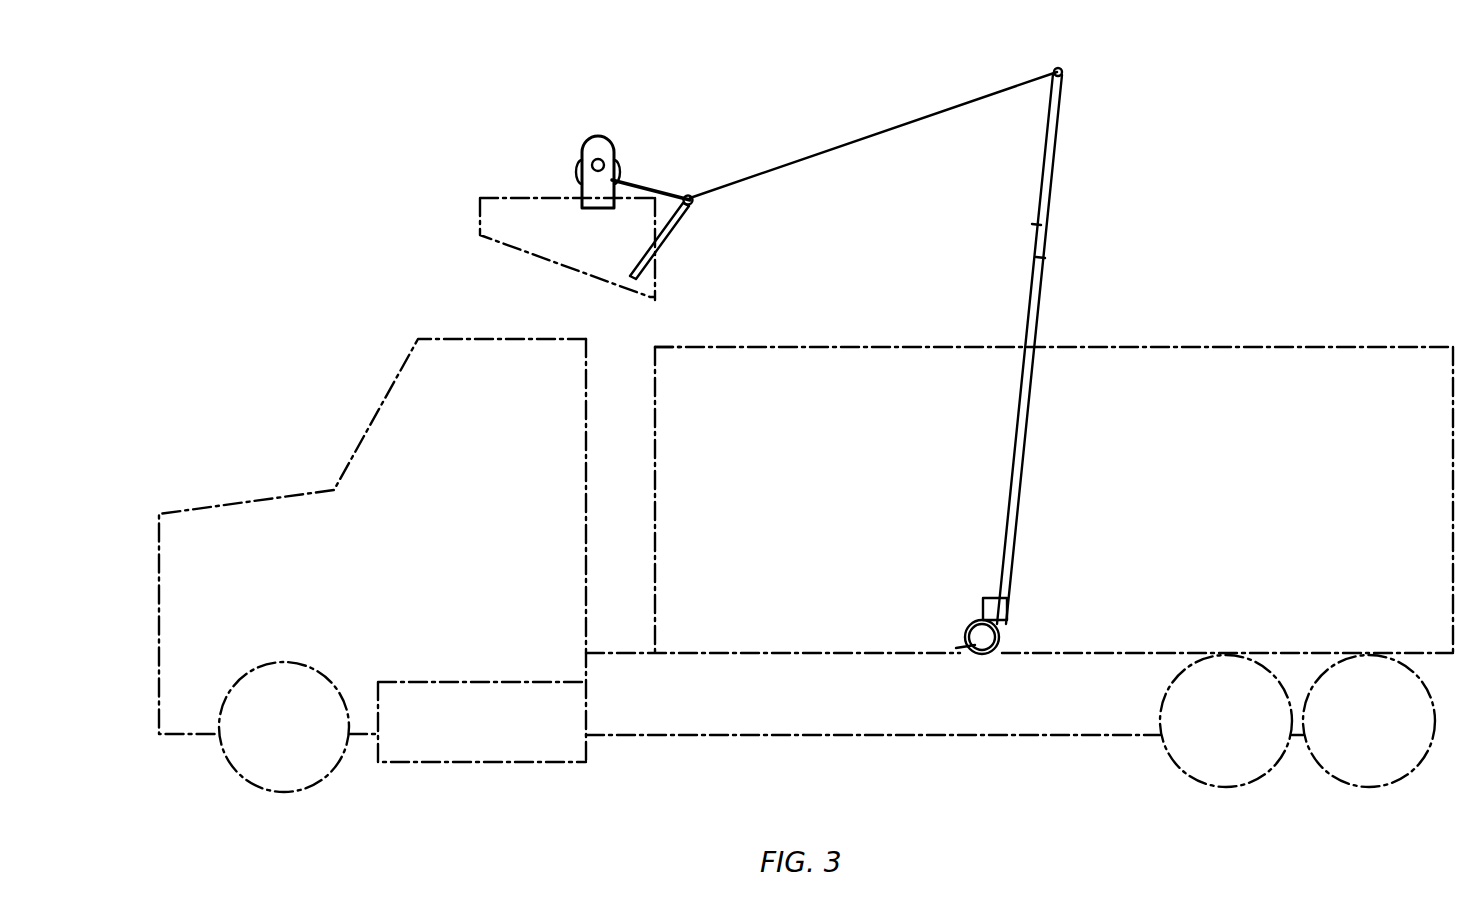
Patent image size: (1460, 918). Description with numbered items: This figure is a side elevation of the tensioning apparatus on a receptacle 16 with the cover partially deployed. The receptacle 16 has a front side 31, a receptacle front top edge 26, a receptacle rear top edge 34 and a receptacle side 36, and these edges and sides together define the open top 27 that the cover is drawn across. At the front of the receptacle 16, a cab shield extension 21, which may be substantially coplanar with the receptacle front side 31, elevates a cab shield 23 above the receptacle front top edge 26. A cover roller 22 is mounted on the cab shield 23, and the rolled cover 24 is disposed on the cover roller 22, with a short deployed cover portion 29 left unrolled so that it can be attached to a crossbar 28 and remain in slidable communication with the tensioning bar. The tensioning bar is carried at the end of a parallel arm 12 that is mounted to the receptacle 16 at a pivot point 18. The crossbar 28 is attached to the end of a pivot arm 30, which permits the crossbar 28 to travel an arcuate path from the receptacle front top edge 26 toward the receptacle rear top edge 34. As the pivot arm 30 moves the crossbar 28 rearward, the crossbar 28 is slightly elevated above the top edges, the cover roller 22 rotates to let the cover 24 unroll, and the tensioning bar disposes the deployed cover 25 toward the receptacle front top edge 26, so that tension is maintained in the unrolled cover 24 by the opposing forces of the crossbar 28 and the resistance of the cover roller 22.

The parallel arm 12 is at (662, 232).
The receptacle 16 is at (1183, 513).
The pivot point 18 is at (652, 267).
The cab shield extension 21 is at (657, 222).
The cover roller 22 is at (590, 153).
The cab shield 23 is at (500, 212).
The rolled cover 24 is at (592, 170).
The deployed cover 25 is at (940, 112).
The receptacle front top edge 26 is at (657, 347).
The open top 27 is at (1122, 330).
The crossbar 28 is at (1046, 345).
The short deployed cover portion 29 is at (690, 195).
The pivot arm 30 is at (1040, 246).
The receptacle front side 31 is at (655, 485).
The receptacle rear top edge 34 is at (1453, 347).
The receptacle side 36 is at (1255, 347).